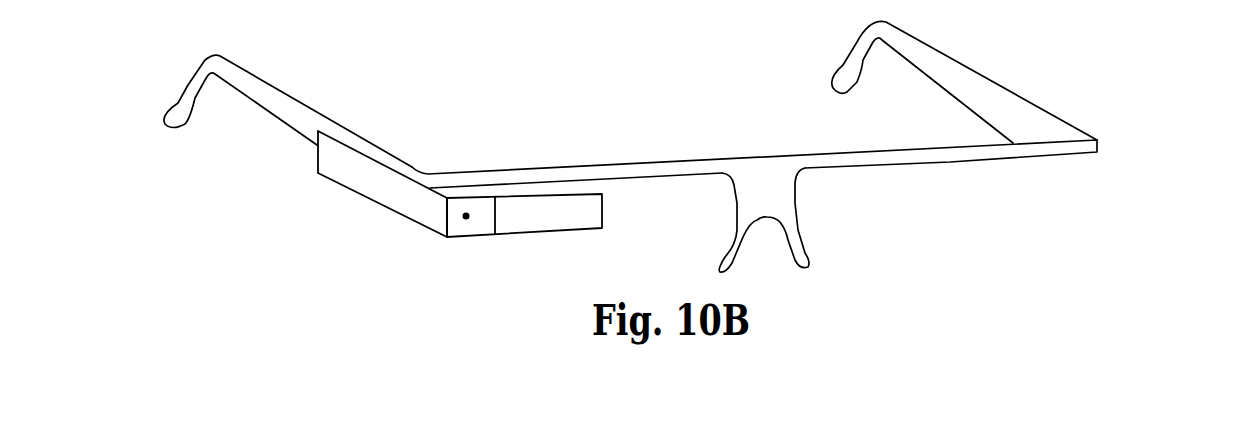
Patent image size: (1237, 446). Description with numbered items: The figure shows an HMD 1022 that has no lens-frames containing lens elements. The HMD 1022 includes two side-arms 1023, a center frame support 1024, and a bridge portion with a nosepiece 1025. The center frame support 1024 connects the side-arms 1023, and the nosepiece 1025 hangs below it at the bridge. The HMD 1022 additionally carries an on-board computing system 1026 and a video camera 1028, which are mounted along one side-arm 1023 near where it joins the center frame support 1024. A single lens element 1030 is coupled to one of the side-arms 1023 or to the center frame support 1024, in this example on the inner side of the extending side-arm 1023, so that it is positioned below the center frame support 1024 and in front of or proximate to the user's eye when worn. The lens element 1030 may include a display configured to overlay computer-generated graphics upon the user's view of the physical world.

The HMD 1022 is at (670, 148).
The side-arms 1023 is at (275, 102).
The center frame support 1024 is at (650, 168).
The nosepiece 1025 is at (792, 213).
The on-board computing system 1026 is at (360, 195).
The video camera 1028 is at (463, 222).
The single lens element 1030 is at (553, 232).